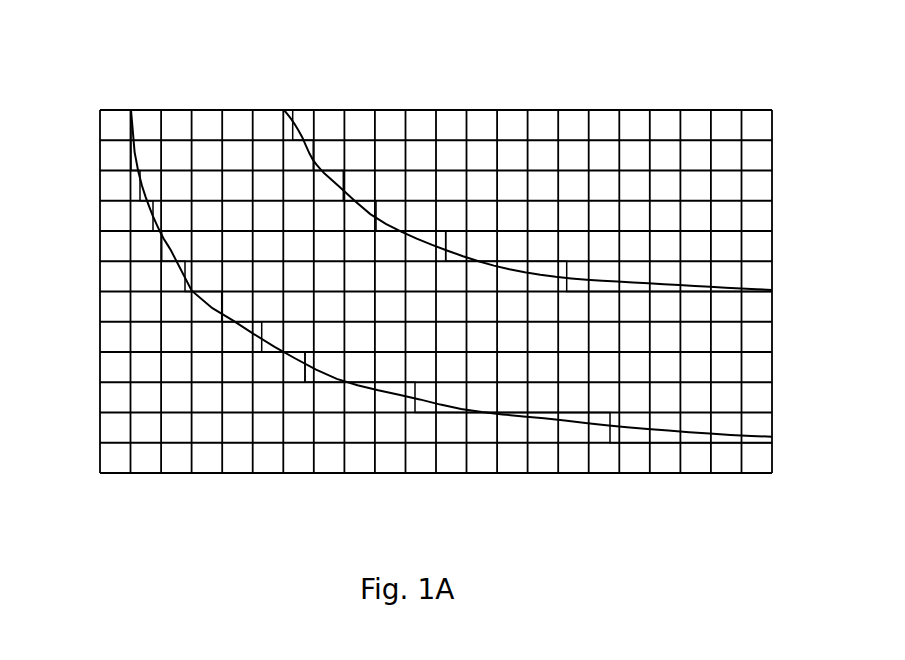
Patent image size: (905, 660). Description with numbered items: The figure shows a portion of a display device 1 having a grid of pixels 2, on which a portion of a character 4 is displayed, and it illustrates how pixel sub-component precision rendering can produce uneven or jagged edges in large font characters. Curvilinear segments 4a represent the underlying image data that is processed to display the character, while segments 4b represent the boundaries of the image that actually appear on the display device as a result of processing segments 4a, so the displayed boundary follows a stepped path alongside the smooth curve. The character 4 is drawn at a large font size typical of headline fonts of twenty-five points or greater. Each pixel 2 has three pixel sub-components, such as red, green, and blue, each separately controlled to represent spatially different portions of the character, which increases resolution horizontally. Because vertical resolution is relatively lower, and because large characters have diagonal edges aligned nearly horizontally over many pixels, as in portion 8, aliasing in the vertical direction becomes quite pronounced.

The display device 1 is at (58, 89).
The pixels 2 is at (107, 401).
The character 4 is at (313, 104).
The curvilinear segments 4a is at (388, 228).
The segments 4b is at (447, 242).
The portion 8 is at (457, 227).